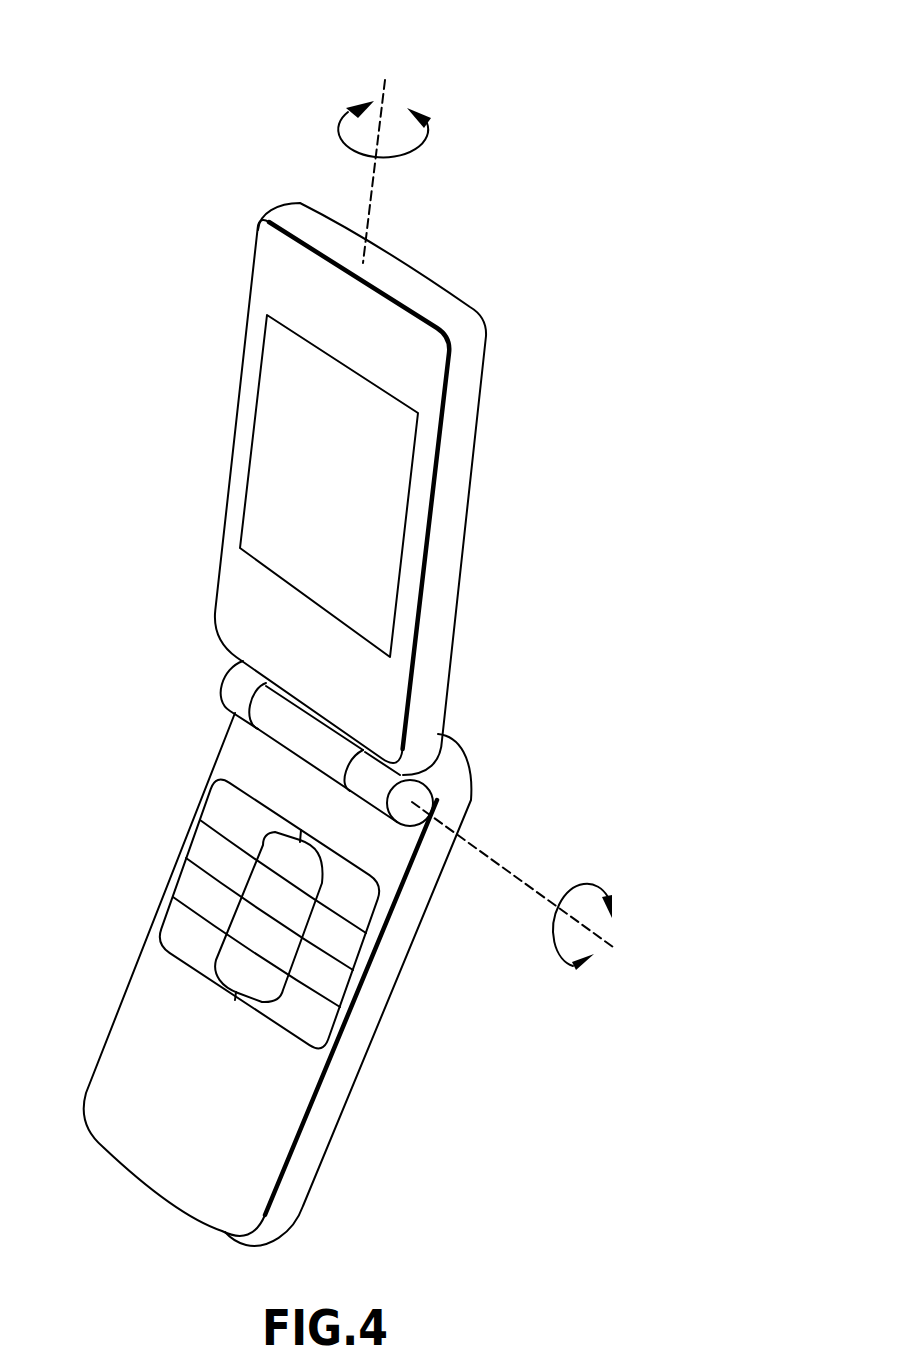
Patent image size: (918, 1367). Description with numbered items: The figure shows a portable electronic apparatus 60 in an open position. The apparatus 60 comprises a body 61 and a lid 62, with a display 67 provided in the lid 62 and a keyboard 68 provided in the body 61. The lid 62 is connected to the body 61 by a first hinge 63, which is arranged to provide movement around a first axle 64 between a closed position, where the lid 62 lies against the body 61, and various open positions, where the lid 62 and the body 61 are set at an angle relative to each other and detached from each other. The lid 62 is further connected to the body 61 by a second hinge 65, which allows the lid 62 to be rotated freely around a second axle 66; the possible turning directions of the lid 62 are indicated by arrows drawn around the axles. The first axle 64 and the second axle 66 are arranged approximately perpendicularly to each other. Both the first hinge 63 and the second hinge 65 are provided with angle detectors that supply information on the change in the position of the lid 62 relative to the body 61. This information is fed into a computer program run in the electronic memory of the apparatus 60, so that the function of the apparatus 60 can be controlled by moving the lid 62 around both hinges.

The electronic apparatus 60 is at (557, 204).
The body 61 is at (120, 1068).
The lid 62 is at (250, 420).
The first hinge 63 is at (237, 687).
The first axle 64 is at (512, 873).
The second hinge 65 is at (303, 713).
The second axle 66 is at (382, 99).
The display 67 is at (387, 453).
The keyboard 68 is at (310, 1013).